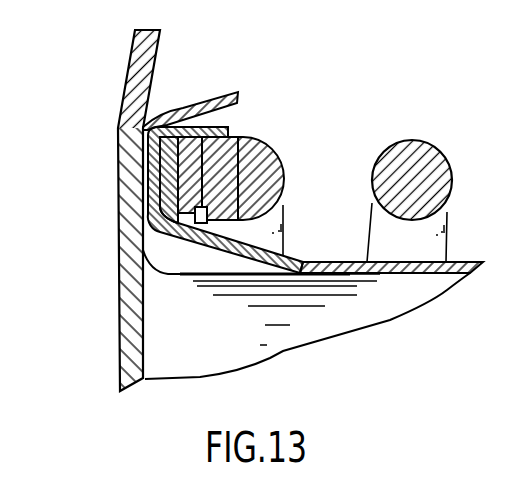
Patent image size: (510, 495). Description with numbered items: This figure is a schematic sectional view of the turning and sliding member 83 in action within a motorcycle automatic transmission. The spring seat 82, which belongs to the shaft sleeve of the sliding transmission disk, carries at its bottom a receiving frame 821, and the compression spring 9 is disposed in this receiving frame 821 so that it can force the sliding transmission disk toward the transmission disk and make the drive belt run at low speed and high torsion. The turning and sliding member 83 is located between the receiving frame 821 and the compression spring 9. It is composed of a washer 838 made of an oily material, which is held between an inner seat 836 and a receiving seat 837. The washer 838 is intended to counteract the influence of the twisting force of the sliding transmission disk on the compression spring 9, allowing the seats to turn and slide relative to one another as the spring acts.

The receiving frame 821 is at (198, 104).
The turning and sliding member 83 is at (168, 177).
The inner seat 836 is at (146, 136).
The washer 838 is at (158, 171).
The receiving seat 837 is at (155, 208).
The compression spring 9 is at (267, 163).
The spring seat 82 is at (305, 260).